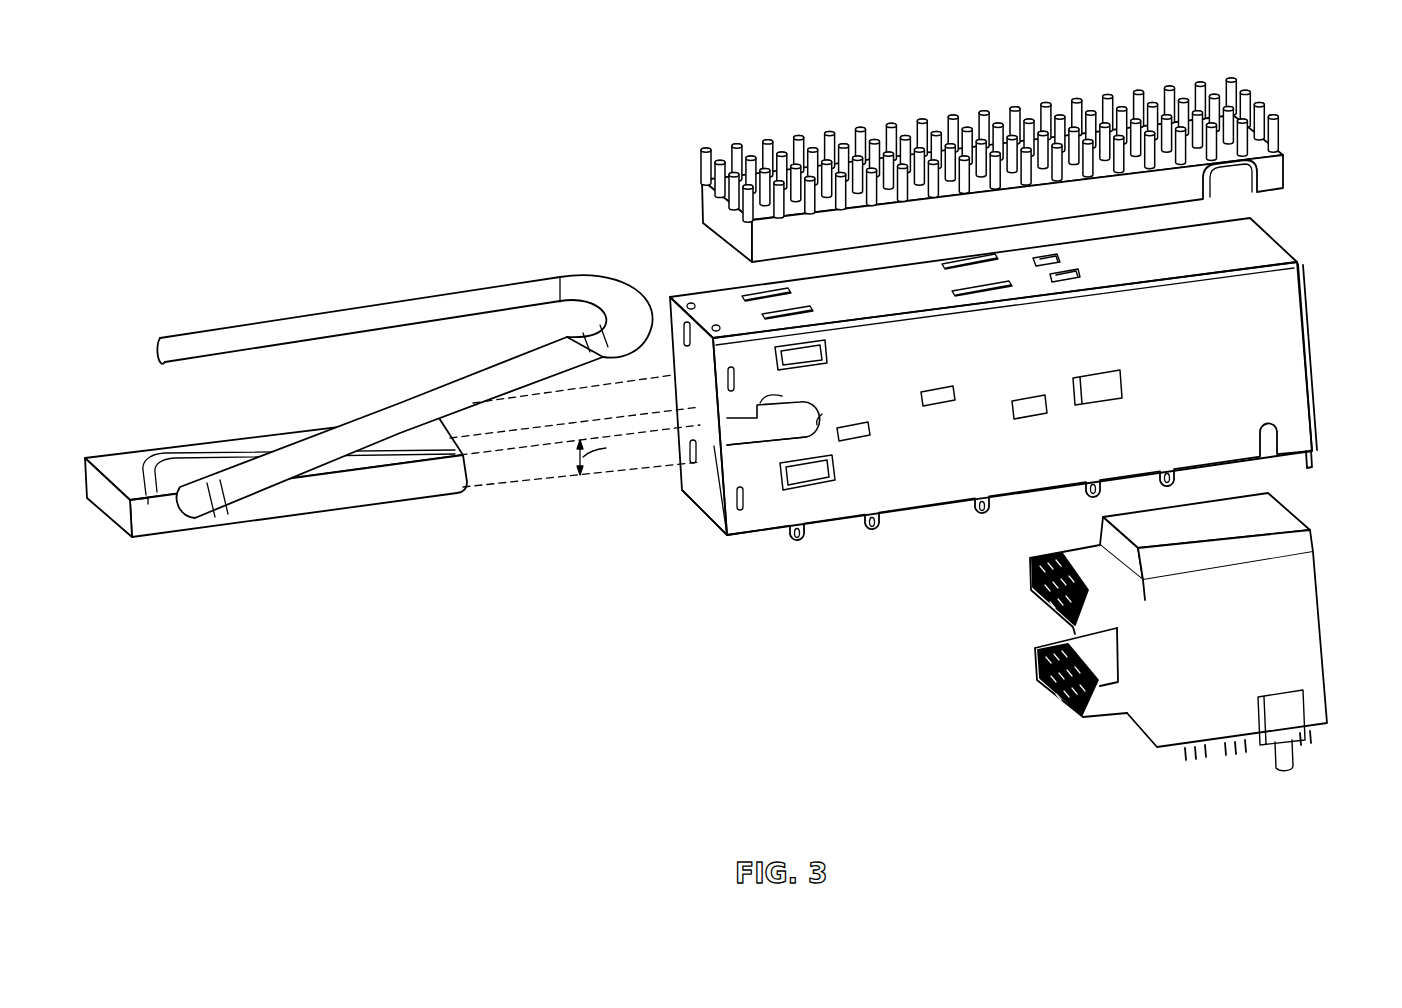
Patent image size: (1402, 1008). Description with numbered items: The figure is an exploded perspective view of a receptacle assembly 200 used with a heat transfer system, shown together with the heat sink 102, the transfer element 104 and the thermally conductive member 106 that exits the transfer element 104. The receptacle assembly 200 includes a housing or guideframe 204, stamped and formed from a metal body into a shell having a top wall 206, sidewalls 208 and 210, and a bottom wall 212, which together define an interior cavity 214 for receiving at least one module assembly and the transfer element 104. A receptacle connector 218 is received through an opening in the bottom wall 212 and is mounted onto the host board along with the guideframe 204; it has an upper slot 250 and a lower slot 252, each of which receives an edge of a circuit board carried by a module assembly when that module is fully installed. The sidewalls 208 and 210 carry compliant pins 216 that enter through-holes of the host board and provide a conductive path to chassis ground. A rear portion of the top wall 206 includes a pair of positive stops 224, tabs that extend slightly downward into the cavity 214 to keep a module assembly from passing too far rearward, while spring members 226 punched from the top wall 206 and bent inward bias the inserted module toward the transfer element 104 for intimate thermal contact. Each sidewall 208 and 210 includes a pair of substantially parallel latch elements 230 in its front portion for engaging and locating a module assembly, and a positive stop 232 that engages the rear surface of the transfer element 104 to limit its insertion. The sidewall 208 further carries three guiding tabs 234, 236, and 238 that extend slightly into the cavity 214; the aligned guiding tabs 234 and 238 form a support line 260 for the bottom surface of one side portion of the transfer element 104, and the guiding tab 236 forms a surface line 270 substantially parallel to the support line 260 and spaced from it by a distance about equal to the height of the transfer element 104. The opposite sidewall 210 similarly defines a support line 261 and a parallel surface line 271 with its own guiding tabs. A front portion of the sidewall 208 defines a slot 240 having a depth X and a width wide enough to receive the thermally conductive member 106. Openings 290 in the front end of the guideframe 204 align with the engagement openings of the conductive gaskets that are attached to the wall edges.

The receptacle assembly 200 is at (213, 133).
The heat sink 102 is at (1300, 163).
The transfer element 104 is at (362, 514).
The thermally conductive member 106 is at (333, 303).
The guideframe 204 is at (1312, 258).
The top wall 206 is at (1218, 262).
The sidewall 208 is at (1237, 354).
The sidewall 210 is at (673, 380).
The bottom wall 212 is at (733, 548).
The interior cavity 214 is at (712, 475).
The compliant pins 216 is at (872, 534).
The receptacle connector 218 is at (1138, 745).
The positive stops 224 is at (1050, 260).
The spring members 226 is at (771, 291).
The latch elements 230 is at (822, 346).
The positive stop 232 is at (1080, 378).
The guiding tab 234 is at (858, 441).
The guiding tab 236 is at (945, 408).
The guiding tab 238 is at (1033, 416).
The slot 240 is at (740, 434).
The upper slot 250 is at (1030, 612).
The lower slot 252 is at (1041, 692).
The support line 260 is at (488, 485).
The support line 261 is at (470, 436).
The surface line 270 is at (557, 443).
The surface line 271 is at (582, 386).
The openings 290 is at (689, 304).